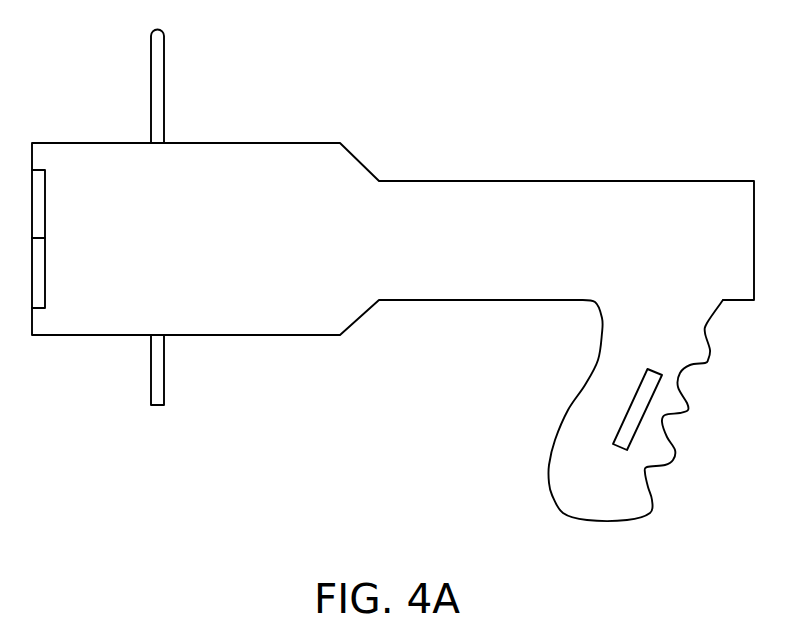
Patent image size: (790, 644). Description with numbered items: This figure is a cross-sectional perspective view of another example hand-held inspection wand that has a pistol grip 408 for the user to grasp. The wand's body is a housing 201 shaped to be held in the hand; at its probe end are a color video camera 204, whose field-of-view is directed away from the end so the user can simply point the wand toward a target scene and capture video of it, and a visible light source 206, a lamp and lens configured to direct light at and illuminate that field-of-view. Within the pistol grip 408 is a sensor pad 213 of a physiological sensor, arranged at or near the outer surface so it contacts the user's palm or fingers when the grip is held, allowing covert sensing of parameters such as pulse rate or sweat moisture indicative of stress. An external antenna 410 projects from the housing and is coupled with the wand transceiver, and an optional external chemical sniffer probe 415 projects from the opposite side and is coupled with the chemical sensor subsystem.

The housing 201 is at (329, 158).
The color video camera 204 is at (46, 285).
The visible light source 206 is at (46, 185).
The sensor pad 213 is at (616, 439).
The pistol grip 408 is at (635, 495).
The external antenna 410 is at (164, 63).
The external chemical sniffer probe 415 is at (164, 372).